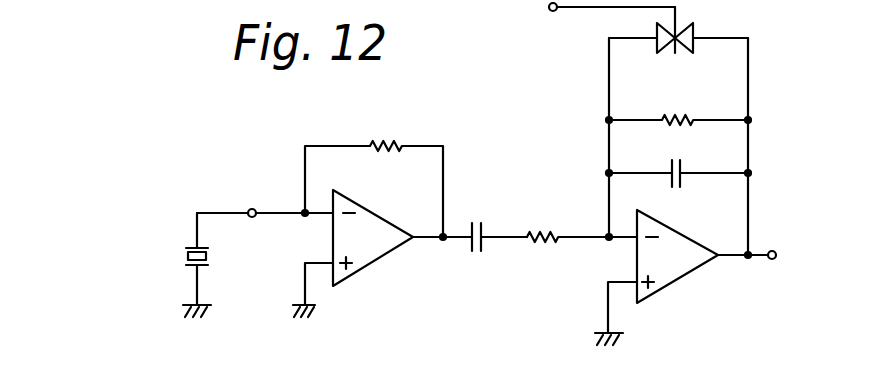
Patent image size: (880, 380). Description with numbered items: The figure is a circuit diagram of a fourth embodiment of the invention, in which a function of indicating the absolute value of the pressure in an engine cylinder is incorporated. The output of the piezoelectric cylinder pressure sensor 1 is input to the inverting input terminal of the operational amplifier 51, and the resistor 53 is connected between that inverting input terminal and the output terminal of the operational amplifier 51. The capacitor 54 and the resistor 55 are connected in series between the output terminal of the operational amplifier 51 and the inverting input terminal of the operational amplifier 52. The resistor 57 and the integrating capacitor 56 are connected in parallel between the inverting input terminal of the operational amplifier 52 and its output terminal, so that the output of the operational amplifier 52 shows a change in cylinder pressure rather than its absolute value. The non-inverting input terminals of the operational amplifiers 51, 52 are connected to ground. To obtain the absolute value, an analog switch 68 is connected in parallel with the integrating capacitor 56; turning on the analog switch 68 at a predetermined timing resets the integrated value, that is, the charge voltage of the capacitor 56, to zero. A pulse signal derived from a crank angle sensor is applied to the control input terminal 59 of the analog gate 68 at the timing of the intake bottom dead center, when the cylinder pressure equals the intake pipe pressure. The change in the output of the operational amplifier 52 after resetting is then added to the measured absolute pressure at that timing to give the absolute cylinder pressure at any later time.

The piezoelectric cylinder pressure sensor 1 is at (211, 256).
The operational amplifier 51 is at (358, 265).
The operational amplifier 52 is at (673, 282).
The resistor 53 is at (388, 136).
The capacitor 54 is at (476, 221).
The resistor 55 is at (535, 226).
The integrating capacitor 56 is at (677, 161).
The resistor 57 is at (680, 113).
The control input terminal 59 is at (576, 10).
The analog switch 68 is at (693, 26).